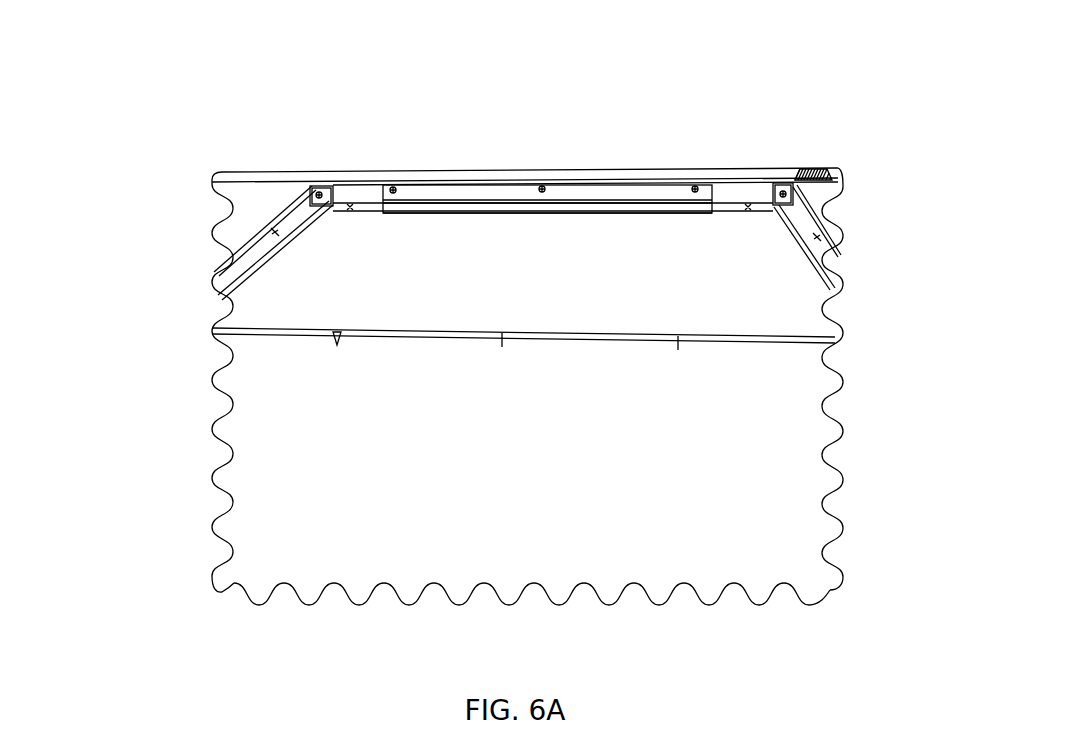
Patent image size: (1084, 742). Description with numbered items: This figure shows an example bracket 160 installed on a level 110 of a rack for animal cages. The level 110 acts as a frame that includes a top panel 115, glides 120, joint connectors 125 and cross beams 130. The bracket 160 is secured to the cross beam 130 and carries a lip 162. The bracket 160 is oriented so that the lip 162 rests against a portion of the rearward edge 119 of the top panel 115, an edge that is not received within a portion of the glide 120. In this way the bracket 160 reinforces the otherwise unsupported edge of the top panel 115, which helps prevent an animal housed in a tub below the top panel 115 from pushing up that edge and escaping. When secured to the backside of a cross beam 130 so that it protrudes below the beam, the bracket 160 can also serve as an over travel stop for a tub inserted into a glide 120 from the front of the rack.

The level 110 is at (545, 100).
The top panel 115 is at (540, 468).
The rearward edge 119 is at (683, 218).
The glide 120 is at (255, 250).
The joint connector 125 is at (820, 168).
The cross beam 130 is at (741, 172).
The bracket 160 is at (565, 190).
The lip 162 is at (632, 200).